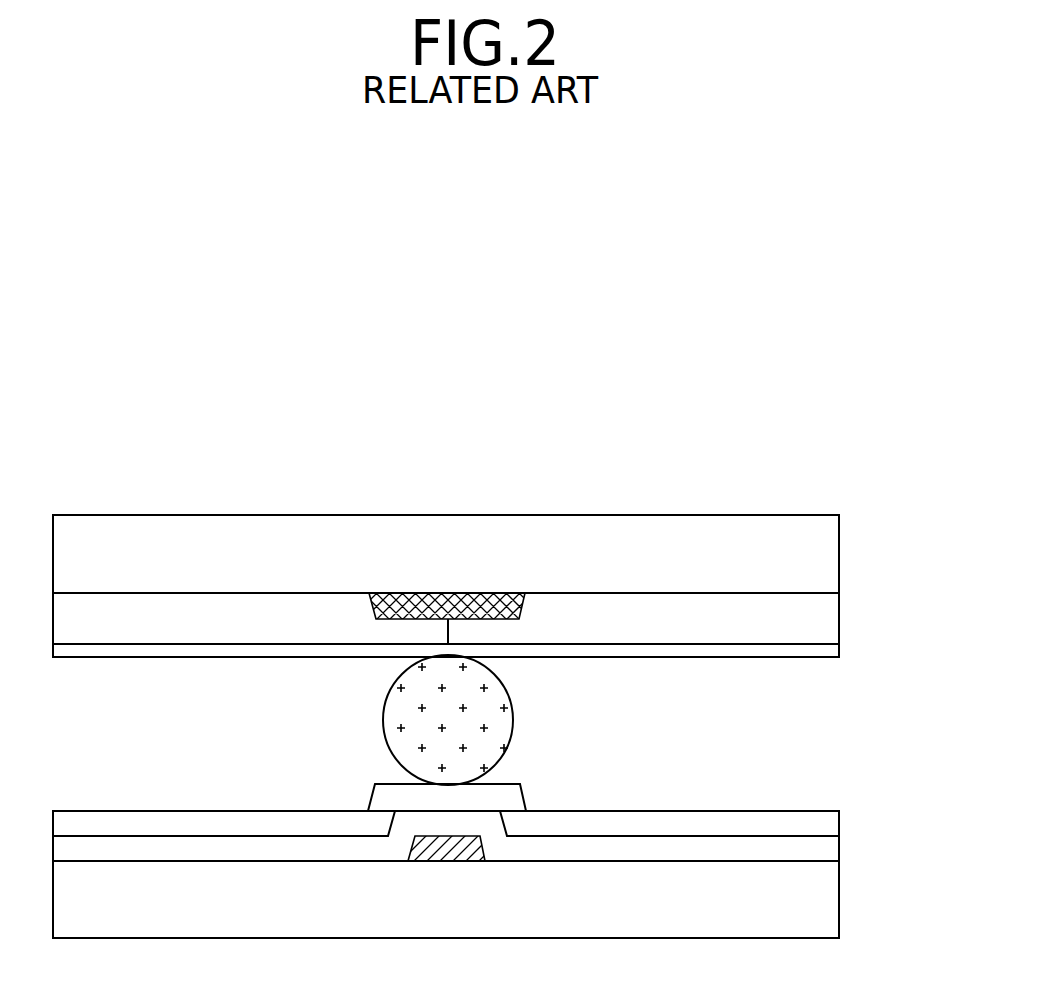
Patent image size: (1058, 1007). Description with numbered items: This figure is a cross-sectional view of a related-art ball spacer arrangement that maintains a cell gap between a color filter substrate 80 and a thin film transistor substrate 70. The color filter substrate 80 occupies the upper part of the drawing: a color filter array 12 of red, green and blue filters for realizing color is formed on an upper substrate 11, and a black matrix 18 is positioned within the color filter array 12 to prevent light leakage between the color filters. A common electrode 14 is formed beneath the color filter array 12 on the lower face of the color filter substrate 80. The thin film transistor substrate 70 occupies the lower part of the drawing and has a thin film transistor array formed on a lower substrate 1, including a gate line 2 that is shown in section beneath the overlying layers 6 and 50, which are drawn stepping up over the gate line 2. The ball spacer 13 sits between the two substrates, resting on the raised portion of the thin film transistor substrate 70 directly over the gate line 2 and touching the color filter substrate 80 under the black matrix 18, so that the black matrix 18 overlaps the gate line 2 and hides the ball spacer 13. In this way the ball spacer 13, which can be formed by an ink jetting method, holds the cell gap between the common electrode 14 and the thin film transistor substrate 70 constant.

The color filter substrate 80 is at (862, 506).
The upper substrate 11 is at (839, 550).
The color filter array 12 is at (839, 614).
The common electrode 14 is at (839, 645).
The black matrix 18 is at (446, 597).
The ball spacer 13 is at (513, 715).
The thin film transistor substrate 70 is at (862, 789).
The passivation layer 50 is at (839, 820).
The gate insulating layer 6 is at (839, 845).
The lower substrate 1 is at (839, 895).
The gate line 2 is at (452, 855).